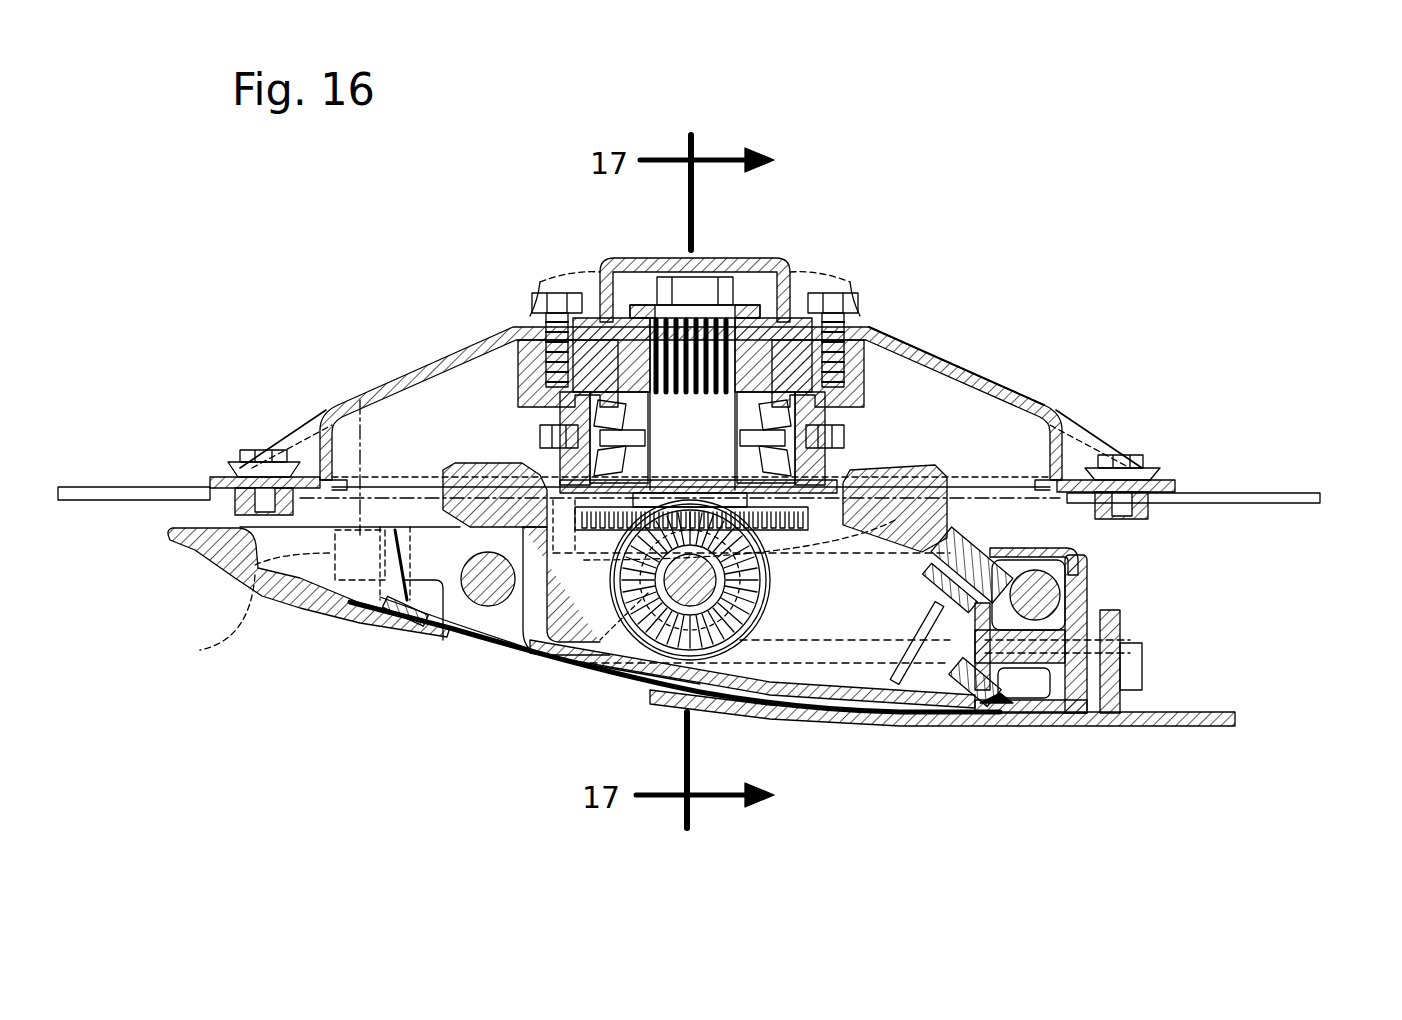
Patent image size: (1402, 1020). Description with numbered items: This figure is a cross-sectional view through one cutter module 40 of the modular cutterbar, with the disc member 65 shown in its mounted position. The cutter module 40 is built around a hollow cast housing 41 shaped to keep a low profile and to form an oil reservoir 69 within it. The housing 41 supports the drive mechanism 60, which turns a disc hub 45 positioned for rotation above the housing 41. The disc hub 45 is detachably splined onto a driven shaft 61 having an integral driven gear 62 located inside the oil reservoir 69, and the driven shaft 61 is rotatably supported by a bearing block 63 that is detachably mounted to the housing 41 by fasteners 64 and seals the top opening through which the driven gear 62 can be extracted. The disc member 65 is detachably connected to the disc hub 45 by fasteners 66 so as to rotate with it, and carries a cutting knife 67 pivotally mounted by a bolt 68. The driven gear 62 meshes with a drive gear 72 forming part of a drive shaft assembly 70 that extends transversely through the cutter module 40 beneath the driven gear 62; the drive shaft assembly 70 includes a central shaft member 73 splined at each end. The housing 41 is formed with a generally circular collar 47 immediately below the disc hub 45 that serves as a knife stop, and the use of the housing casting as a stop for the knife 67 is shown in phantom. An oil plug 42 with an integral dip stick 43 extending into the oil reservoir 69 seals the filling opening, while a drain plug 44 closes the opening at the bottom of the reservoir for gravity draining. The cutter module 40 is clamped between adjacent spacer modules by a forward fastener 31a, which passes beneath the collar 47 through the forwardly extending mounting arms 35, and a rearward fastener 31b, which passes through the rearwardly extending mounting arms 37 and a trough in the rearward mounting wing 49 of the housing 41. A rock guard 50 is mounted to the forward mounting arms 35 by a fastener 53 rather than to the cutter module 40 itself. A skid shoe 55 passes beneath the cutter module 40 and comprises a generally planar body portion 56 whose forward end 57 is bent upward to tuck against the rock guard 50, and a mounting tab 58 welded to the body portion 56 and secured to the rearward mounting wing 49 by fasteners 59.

The forward fastener 31a is at (480, 620).
The rearward fastener 31b is at (1065, 552).
The forwardly extending mounting arms 35 is at (318, 404).
The rearwardly extending mounting arms 37 is at (1040, 470).
The cutter module 40 is at (412, 352).
The hollow cast housing 41 is at (520, 655).
The oil plug 42 is at (1025, 570).
The integral dip stick 43 is at (945, 690).
The drain plug 44 is at (990, 712).
The disc hub 45 is at (860, 360).
The collar 47 is at (400, 470).
The rearward mounting wing 49 is at (1100, 565).
The rock guard 50 is at (215, 575).
The fastener 53 is at (246, 611).
The skid shoe 55 is at (1180, 726).
The body portion 56 is at (800, 700).
The forward end 57 is at (395, 620).
The mounting tab 58 is at (1150, 628).
The fasteners 59 is at (1150, 665).
The drive mechanism 60 is at (778, 625).
The driven shaft 61 is at (740, 318).
The driven gear 62 is at (770, 530).
The bearing block 63 is at (570, 420).
The fasteners 64 is at (540, 436).
The disc member 65 is at (960, 360).
The fasteners 66 is at (560, 293).
The cutting knife 67 is at (135, 487).
The bolt 68 is at (260, 450).
The oil reservoir 69 is at (878, 578).
The drive shaft assembly 70 is at (500, 606).
The drive gear 72 is at (655, 620).
The central shaft member 73 is at (685, 595).